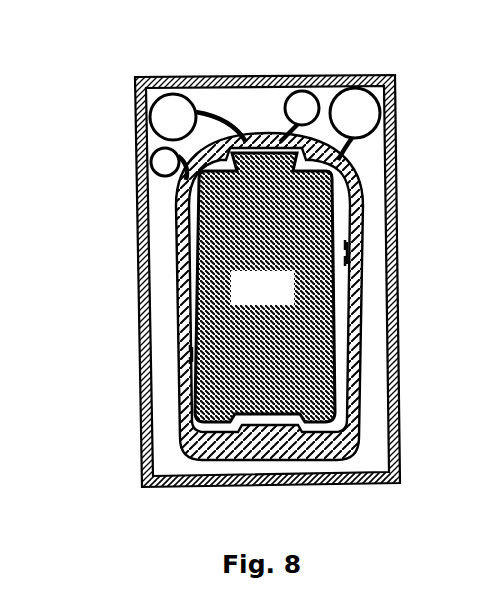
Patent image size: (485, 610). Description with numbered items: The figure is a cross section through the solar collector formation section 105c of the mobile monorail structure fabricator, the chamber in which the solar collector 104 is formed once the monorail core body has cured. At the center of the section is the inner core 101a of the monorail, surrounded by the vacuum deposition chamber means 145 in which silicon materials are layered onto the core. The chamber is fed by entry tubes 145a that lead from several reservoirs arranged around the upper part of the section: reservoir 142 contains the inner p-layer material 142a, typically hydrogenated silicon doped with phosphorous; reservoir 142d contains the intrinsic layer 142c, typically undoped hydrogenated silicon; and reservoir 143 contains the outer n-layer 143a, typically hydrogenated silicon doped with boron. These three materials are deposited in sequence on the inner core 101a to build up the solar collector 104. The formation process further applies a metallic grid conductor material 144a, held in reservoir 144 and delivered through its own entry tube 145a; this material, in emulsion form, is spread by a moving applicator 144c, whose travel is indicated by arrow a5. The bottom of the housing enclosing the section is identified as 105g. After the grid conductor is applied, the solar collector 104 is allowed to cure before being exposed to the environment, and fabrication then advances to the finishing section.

The solar collector formation section 105c is at (133, 72).
The housing bottom wall 105g is at (367, 484).
The reservoir 142 is at (134, 82).
The inner p-layer material 142a is at (173, 118).
The intrinsic layer 142c is at (164, 162).
The reservoir 142d is at (147, 186).
The reservoir 143 is at (396, 85).
The outer n-layer 143a is at (355, 113).
The reservoir 144 is at (350, 82).
The metallic grid conductor material 144a is at (300, 80).
The moving applicator 144c is at (178, 408).
The vacuum deposition chamber means 145 is at (180, 302).
The entry tubes 145a is at (415, 147).
The solar collector 104 is at (336, 352).
The inner core 101a is at (291, 302).
The arrow a5 is at (187, 360).